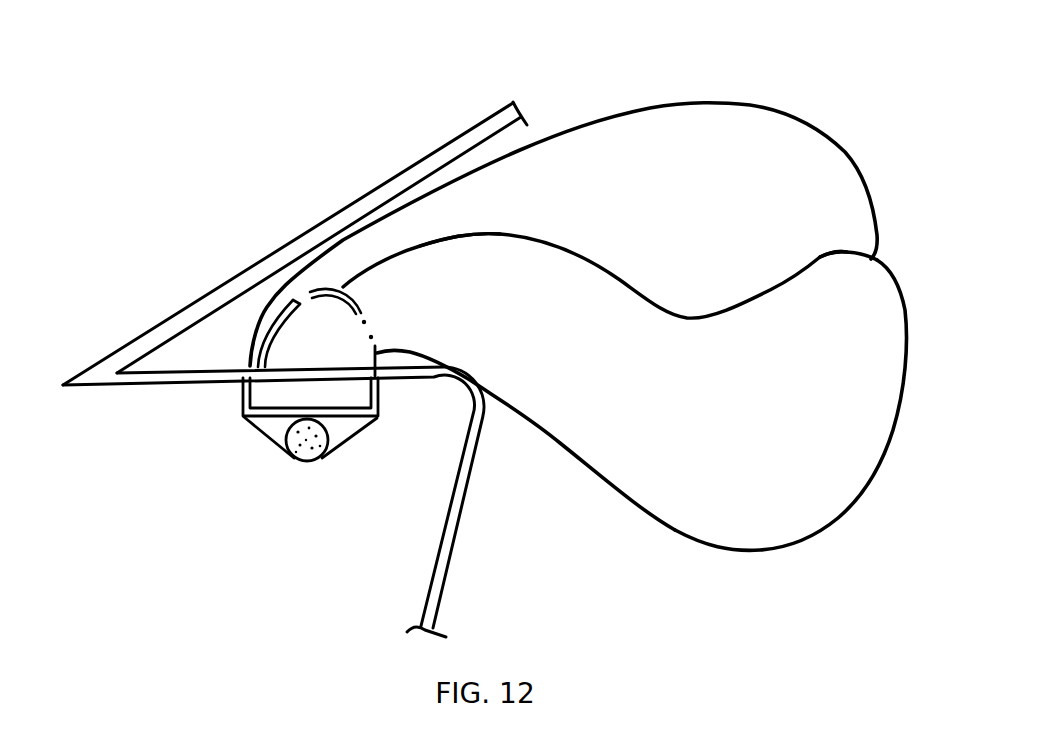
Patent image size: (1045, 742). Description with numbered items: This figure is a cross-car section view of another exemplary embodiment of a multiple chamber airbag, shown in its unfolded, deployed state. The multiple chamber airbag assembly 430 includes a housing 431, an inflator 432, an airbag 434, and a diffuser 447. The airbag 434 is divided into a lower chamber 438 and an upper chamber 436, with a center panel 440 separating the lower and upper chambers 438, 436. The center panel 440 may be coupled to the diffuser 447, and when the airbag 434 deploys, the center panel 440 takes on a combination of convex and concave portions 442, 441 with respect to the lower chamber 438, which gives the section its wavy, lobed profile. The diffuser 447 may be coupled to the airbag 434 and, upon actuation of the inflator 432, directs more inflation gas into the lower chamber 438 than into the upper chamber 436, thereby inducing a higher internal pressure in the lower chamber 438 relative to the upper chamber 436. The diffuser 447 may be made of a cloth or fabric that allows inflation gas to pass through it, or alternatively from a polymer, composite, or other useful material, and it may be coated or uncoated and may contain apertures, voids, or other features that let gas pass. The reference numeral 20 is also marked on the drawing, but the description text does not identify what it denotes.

The handle shaft 20 is at (160, 172).
The multiple chamber airbag assembly 430 is at (176, 568).
The housing 431 is at (270, 430).
The inflator 432 is at (308, 452).
The airbag 434 is at (628, 560).
The upper chamber 436 is at (812, 153).
The lower chamber 438 is at (795, 523).
The center panel 440 is at (820, 257).
The concave portion 441 is at (686, 296).
The convex portions 442 is at (490, 244).
The diffuser 447 is at (283, 307).